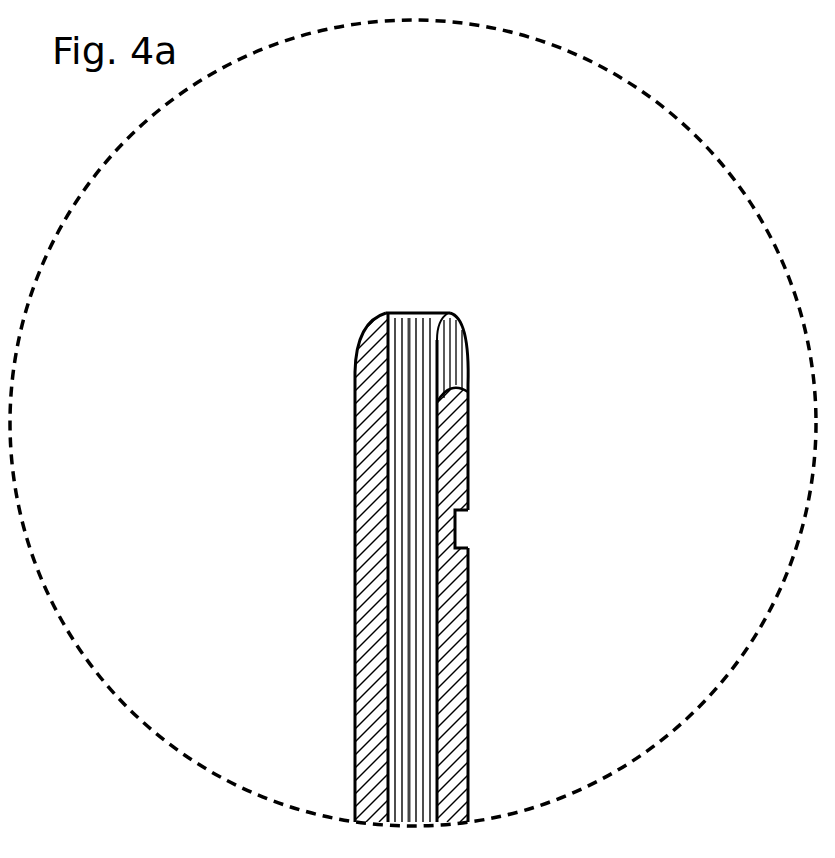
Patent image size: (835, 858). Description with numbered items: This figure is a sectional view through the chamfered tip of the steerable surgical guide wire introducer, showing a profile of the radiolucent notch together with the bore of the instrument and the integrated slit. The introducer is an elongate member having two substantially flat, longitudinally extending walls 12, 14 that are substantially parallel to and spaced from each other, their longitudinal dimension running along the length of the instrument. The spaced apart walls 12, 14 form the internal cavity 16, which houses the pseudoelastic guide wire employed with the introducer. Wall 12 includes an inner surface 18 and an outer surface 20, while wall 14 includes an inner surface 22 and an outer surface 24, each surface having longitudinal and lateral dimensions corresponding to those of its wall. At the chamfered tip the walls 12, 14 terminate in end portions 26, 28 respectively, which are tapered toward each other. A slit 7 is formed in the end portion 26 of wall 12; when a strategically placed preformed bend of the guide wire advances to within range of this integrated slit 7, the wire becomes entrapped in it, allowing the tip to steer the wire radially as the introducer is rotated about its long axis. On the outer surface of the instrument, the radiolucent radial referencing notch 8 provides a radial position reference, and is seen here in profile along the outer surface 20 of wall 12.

The integrated slit 7 is at (450, 357).
The radial referencing notch 8 is at (463, 527).
The wall of the introducer 12 is at (468, 691).
The wall of the introducer 14 is at (356, 686).
The cavity in the introducer 16 is at (424, 340).
The inner surface of wall 12 18 is at (437, 773).
The outer surface of wall 12 20 is at (468, 641).
The inner surface of wall 14 22 is at (390, 486).
The outer surface of wall 14 24 is at (356, 535).
The end portion of wall 12 26 is at (455, 320).
The end portion of wall 14 28 is at (376, 321).